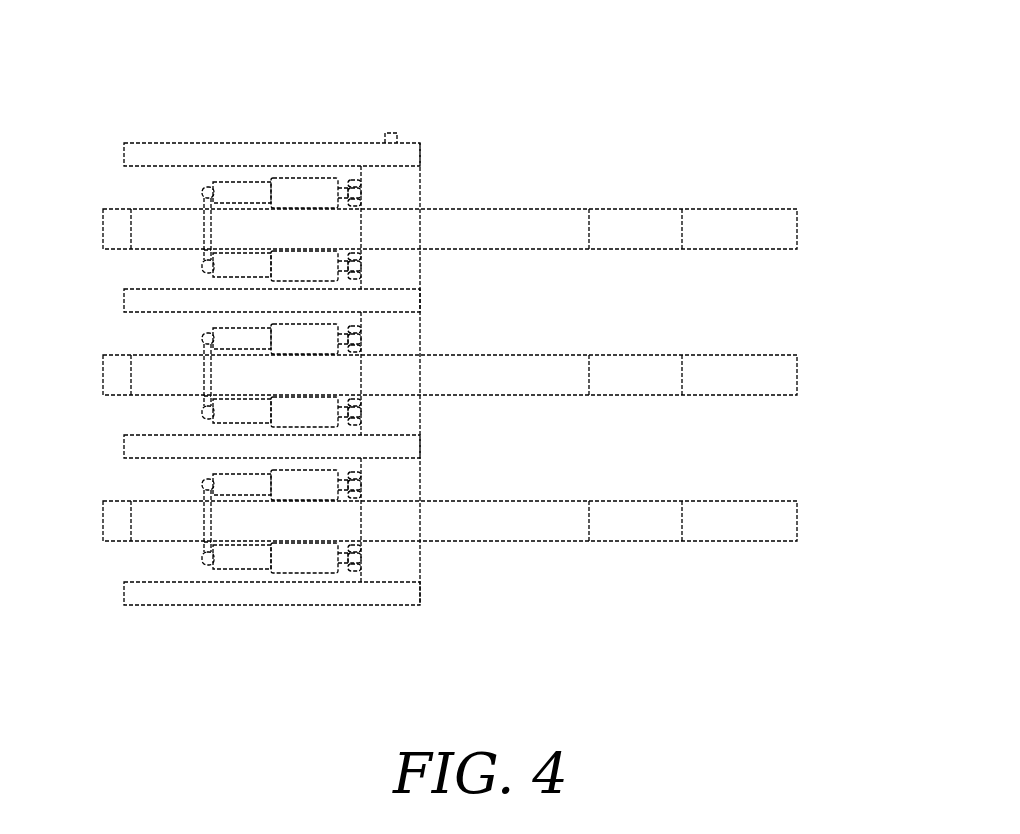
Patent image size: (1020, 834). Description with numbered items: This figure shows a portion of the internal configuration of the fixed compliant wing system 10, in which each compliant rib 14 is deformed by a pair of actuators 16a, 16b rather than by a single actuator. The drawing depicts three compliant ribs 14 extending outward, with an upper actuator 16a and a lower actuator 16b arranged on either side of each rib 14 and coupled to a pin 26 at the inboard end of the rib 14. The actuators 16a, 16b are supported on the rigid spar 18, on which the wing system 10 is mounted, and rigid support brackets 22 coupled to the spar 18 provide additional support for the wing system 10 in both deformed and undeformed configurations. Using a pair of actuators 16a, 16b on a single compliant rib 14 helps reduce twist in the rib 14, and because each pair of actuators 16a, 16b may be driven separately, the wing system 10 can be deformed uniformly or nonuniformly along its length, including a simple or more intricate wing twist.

The fixed compliant wing system 10 is at (620, 69).
The compliant rib 14 is at (810, 456).
The actuator 16a is at (468, 465).
The actuator 16b is at (468, 575).
The rigid spar 18 is at (376, 573).
The rigid support bracket 22 is at (133, 595).
The pin 26 is at (207, 496).